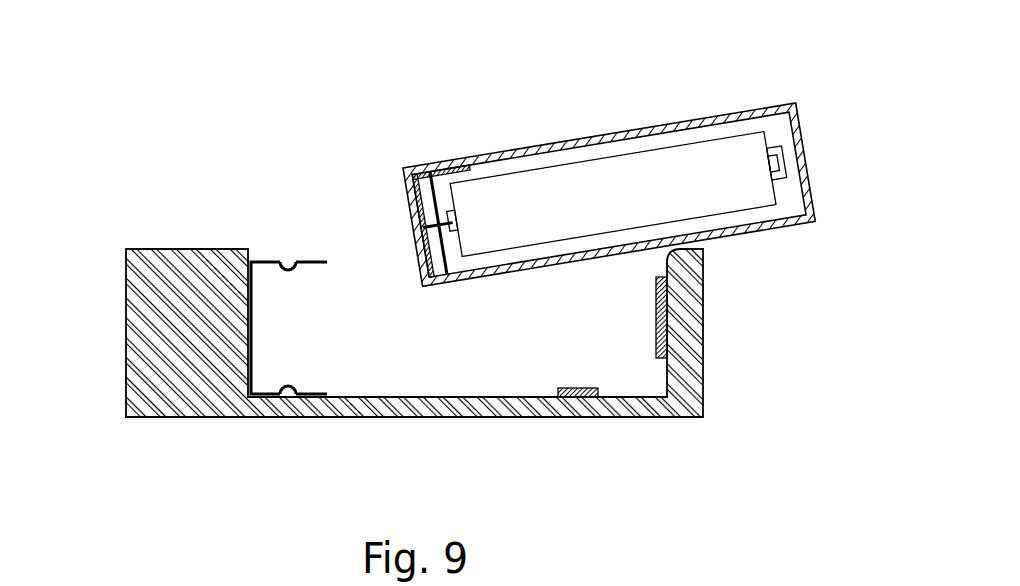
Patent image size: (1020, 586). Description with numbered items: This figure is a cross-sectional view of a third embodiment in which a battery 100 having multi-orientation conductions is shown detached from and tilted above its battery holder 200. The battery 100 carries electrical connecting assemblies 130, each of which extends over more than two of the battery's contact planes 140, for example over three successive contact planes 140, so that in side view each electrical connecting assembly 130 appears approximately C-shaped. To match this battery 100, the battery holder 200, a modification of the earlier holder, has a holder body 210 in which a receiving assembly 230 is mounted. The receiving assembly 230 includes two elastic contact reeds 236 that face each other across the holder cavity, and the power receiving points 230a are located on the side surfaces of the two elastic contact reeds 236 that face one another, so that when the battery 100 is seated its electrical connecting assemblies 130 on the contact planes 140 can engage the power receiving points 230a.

The battery 100 is at (568, 171).
The electrical connecting assembly 130 is at (405, 197).
The contact plane 140 is at (555, 142).
The battery holder 200 is at (370, 276).
The holder body 210 is at (183, 255).
The receiving assembly 230 is at (295, 328).
The power receiving point 230a is at (288, 271).
The elastic contact reed 236 is at (284, 260).